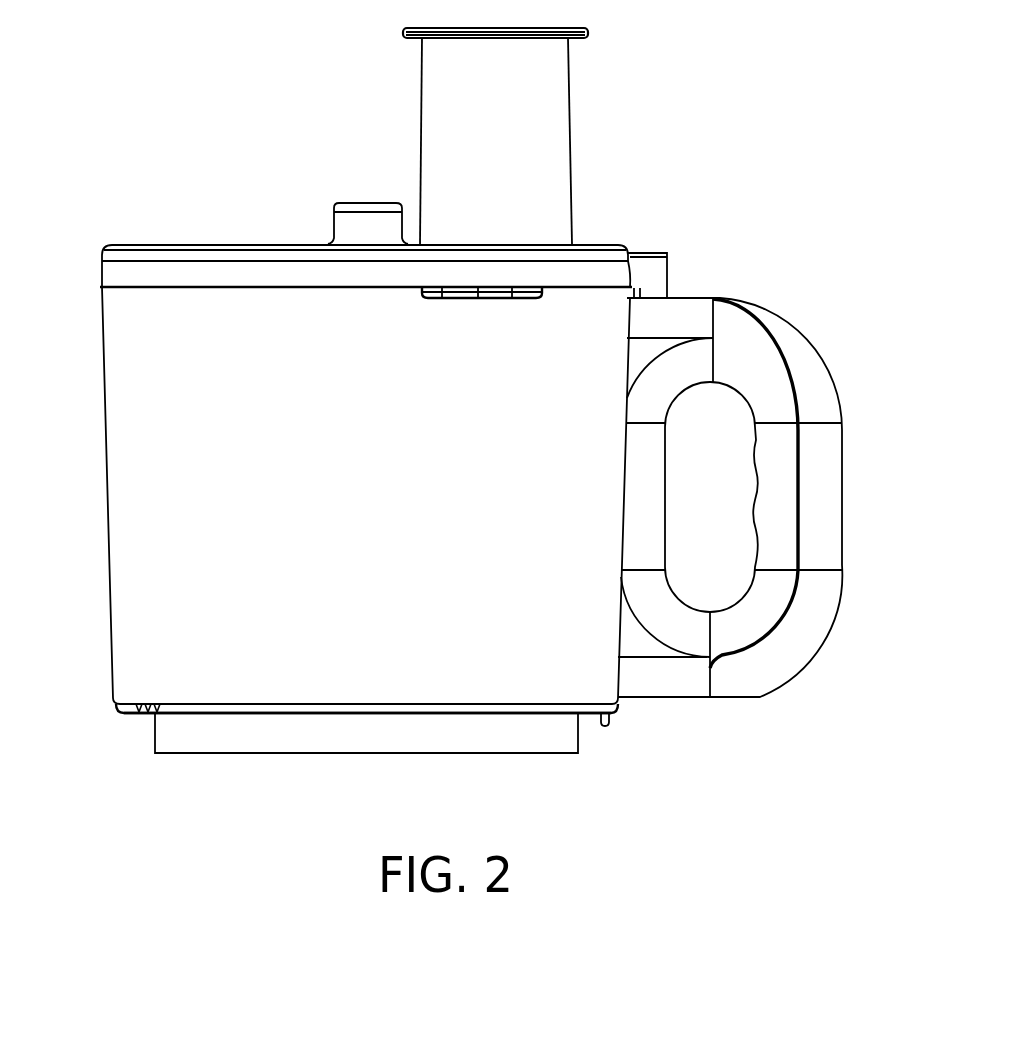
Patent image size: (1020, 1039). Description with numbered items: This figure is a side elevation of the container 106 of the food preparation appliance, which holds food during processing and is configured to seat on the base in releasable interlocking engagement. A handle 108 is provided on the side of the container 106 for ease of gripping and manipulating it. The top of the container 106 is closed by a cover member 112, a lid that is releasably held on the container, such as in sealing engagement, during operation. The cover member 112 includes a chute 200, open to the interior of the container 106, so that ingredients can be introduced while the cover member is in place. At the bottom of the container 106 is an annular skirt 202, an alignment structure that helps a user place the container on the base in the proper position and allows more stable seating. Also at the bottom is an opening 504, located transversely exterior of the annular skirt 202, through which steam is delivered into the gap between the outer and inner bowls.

The chute 200 is at (537, 88).
The cover member 112 is at (158, 258).
The container 106 is at (125, 318).
The handle 108 is at (826, 465).
The opening 504 is at (140, 713).
The annular skirt 202 is at (572, 742).